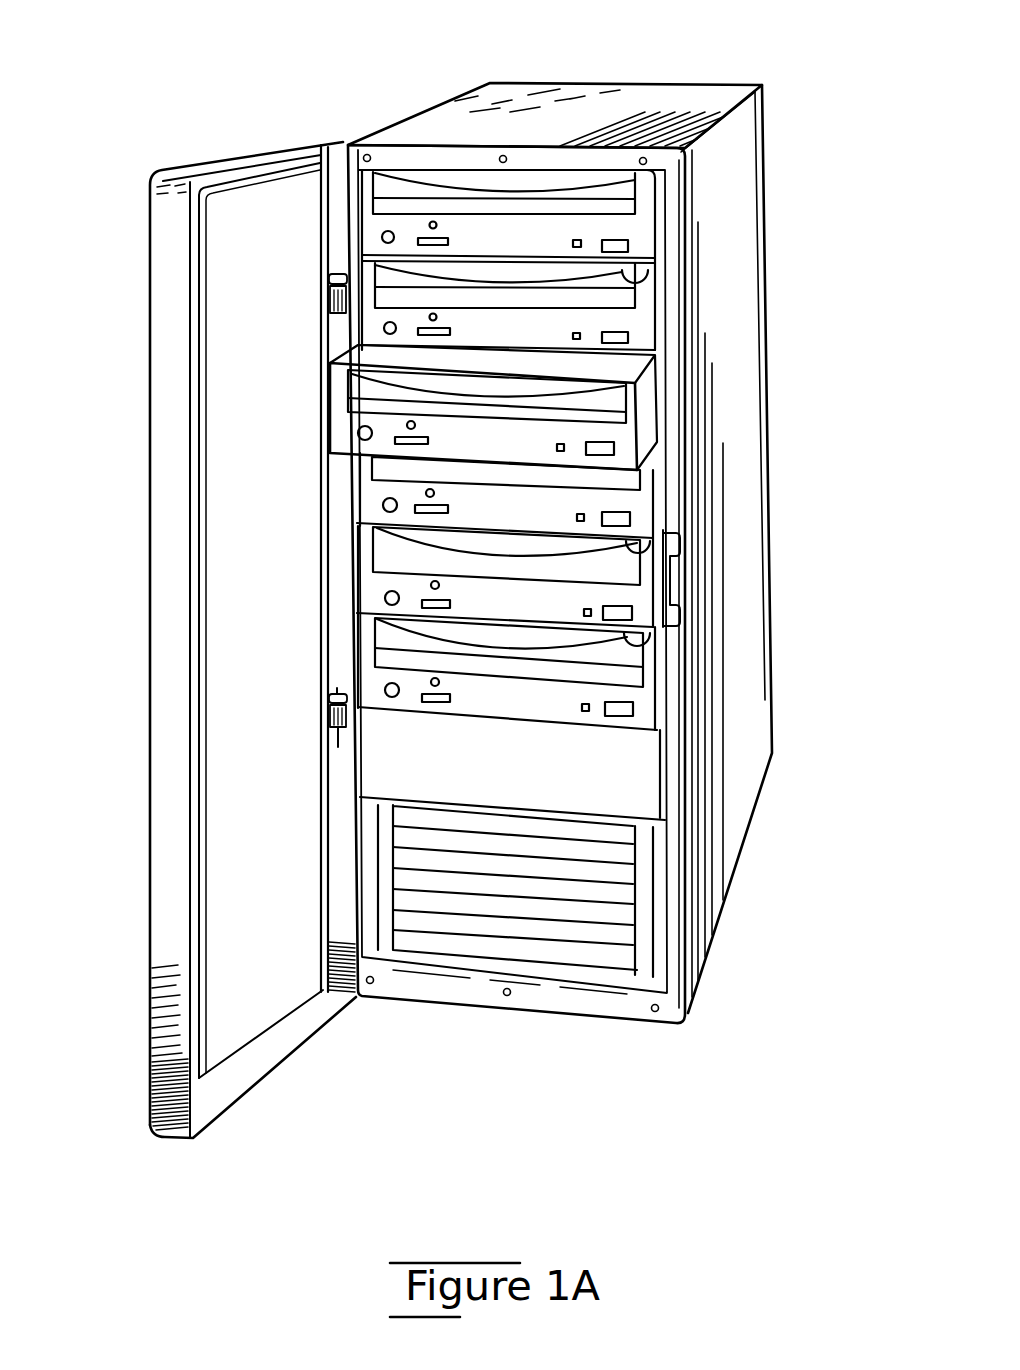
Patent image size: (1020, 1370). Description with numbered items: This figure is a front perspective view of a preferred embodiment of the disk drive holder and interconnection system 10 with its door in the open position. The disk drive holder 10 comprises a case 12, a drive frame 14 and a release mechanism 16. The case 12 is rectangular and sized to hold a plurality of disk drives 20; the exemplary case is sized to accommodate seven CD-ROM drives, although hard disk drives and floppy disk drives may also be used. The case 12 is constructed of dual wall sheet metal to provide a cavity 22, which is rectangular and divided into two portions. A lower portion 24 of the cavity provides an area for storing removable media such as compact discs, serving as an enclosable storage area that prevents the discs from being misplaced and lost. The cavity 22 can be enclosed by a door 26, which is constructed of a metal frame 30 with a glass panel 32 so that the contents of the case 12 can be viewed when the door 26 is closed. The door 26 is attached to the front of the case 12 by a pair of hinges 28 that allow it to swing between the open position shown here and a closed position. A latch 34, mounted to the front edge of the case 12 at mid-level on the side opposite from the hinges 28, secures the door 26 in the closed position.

The disk drive holder and interconnection system 10 is at (668, 70).
The case 12 is at (767, 638).
The drive frame 14 is at (656, 410).
The release mechanism 16 is at (648, 280).
The disk drives 20 is at (347, 143).
The cavity 22 is at (393, 758).
The lower portion 24 is at (583, 972).
The door 26 is at (210, 671).
The hinges 28 is at (328, 296).
The metal frame 30 is at (188, 1134).
The glass panel 32 is at (280, 1003).
The latch 34 is at (665, 590).